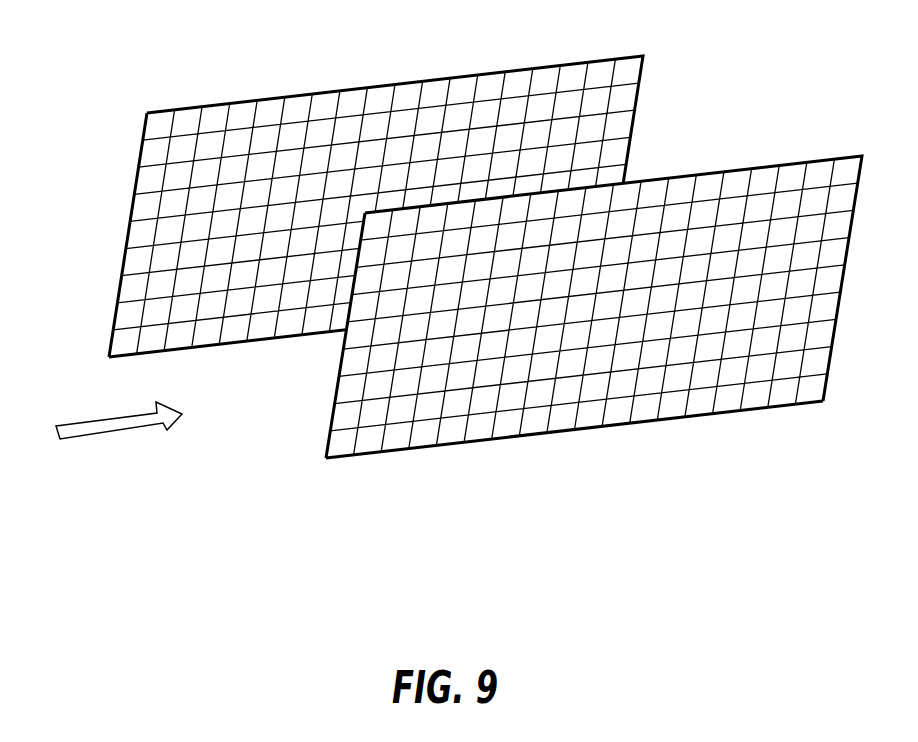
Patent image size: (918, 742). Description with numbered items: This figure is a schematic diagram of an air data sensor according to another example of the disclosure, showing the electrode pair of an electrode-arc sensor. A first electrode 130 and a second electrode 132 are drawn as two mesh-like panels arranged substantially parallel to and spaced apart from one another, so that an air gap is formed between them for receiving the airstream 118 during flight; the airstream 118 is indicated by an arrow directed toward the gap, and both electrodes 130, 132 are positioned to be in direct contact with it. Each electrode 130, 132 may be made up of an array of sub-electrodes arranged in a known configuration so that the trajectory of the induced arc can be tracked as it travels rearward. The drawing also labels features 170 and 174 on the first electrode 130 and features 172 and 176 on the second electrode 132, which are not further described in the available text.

The airstream 118 is at (108, 417).
The first electrode 130 is at (735, 167).
The second electrode 132 is at (357, 90).
The side edge of first screen 170 is at (337, 388).
The side edge of second screen 172 is at (127, 236).
The bottom edge of first screen 174 is at (338, 445).
The bottom edge of second screen 176 is at (120, 345).